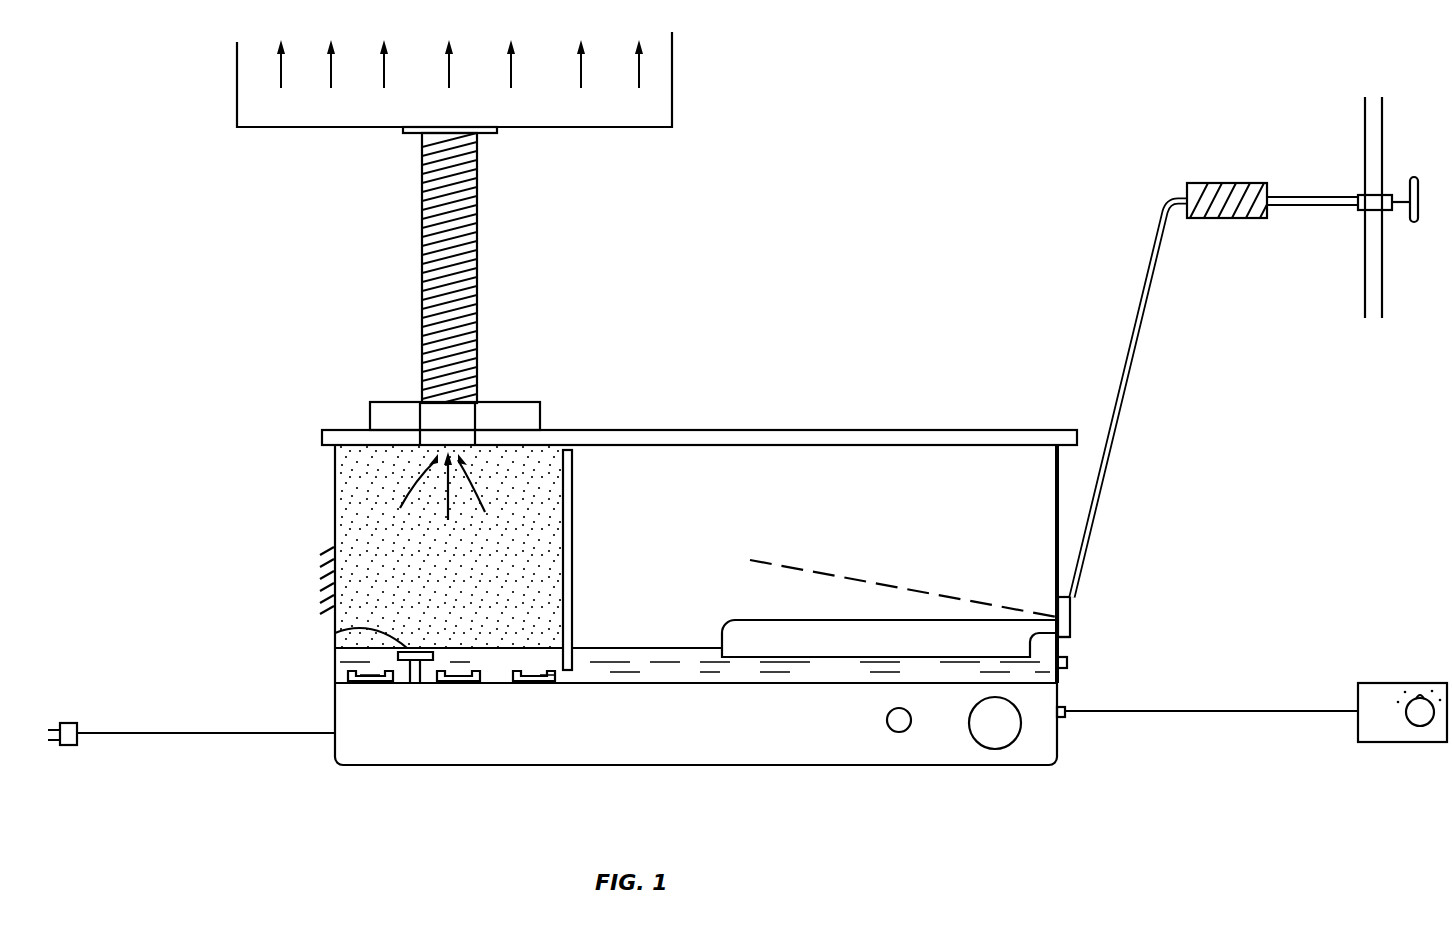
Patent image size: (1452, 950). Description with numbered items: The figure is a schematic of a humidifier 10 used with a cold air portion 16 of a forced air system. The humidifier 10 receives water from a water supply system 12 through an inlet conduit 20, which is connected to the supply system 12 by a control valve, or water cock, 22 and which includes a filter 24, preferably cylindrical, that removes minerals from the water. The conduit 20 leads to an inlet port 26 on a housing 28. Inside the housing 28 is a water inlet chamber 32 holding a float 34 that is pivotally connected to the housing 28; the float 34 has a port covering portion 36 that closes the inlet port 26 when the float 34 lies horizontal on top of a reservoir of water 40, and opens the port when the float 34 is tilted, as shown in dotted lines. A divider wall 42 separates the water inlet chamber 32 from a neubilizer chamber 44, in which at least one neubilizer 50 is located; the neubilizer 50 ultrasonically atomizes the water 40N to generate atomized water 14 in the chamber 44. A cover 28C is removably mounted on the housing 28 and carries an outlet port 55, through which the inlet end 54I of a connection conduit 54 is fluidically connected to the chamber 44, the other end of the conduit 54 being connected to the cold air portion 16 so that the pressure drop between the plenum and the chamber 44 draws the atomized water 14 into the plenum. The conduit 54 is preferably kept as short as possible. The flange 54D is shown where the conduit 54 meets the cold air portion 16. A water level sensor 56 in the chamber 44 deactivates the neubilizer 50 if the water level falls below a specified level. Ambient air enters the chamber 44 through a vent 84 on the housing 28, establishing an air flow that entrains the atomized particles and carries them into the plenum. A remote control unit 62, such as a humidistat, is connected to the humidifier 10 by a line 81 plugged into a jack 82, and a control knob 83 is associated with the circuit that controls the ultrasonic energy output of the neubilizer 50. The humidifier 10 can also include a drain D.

The humidifier 10 is at (940, 380).
The water supply system 12 is at (1382, 288).
The atomized water 14 is at (548, 453).
The cold air portion 16 is at (237, 93).
The inlet conduit 20 is at (1145, 333).
The control valve 22 is at (1357, 212).
The filter 24 is at (1240, 183).
The inlet port 26 is at (1075, 625).
The housing 28 is at (1060, 487).
The cover 28C is at (772, 420).
The water inlet chamber 32 is at (994, 574).
The float 34 is at (798, 607).
The port covering portion 36 is at (1058, 610).
The reservoir of water 40 is at (663, 648).
The water 40N is at (528, 742).
The divider wall 42 is at (572, 550).
The neubilizer chamber 44 is at (512, 577).
The neubilizer 50 is at (255, 733).
The connection conduit 54 is at (477, 287).
The screw flange 54D is at (493, 130).
The inlet end 54I is at (472, 406).
The outlet port 55 is at (420, 427).
The water level sensor 56 is at (335, 635).
The remote control unit 62 is at (1387, 742).
The line 81 is at (1250, 711).
The jack 82 is at (1065, 712).
The control knob 83 is at (1012, 747).
The vent 84 is at (318, 568).
The drain D is at (1067, 662).